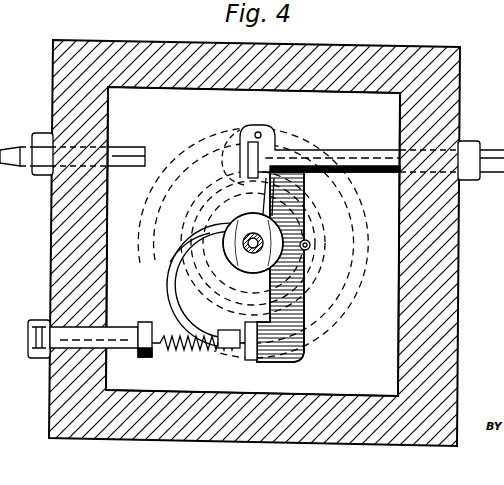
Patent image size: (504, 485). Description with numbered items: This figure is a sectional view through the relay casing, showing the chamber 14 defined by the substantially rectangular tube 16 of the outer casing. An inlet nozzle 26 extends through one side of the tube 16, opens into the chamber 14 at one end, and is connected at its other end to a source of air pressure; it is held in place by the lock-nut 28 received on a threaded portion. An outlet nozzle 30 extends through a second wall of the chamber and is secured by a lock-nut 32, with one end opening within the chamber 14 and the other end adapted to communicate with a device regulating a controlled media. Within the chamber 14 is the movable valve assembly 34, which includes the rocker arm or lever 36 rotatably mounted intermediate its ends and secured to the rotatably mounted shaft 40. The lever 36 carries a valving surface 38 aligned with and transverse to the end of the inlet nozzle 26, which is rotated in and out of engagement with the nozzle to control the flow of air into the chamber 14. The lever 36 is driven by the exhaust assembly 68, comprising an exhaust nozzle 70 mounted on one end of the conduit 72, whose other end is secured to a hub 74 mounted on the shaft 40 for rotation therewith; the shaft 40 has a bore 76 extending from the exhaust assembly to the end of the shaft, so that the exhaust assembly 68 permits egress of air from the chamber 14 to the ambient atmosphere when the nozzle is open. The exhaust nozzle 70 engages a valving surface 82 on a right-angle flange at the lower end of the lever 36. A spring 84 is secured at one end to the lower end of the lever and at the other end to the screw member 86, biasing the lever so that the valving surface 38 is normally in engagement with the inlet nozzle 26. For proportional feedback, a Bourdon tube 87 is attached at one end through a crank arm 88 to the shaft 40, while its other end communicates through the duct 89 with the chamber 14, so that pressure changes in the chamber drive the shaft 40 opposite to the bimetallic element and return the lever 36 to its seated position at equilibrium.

The chamber 14 is at (164, 98).
The rectangular tube 16 is at (53, 69).
The inlet nozzle 26 is at (350, 150).
The lock-nut 28 is at (452, 148).
The outlet nozzle 30 is at (30, 163).
The lock-nut 32 is at (42, 133).
The movable valve assembly 34 is at (305, 288).
The rocker arm or lever 36 is at (302, 316).
The valving surface 38 is at (266, 128).
The rotatably mounted shaft 40 is at (256, 242).
The exhaust assembly 68 is at (176, 258).
The exhaust nozzle 70 is at (230, 330).
The conduit 72 is at (170, 275).
The hub 74 is at (244, 235).
The bore 76 is at (250, 242).
The valving surface 82 is at (248, 360).
The spring 84 is at (188, 352).
The screw member 86 is at (118, 328).
The Bourdon tube 87 is at (312, 335).
The crank arm 88 is at (246, 150).
The duct 89 is at (310, 245).